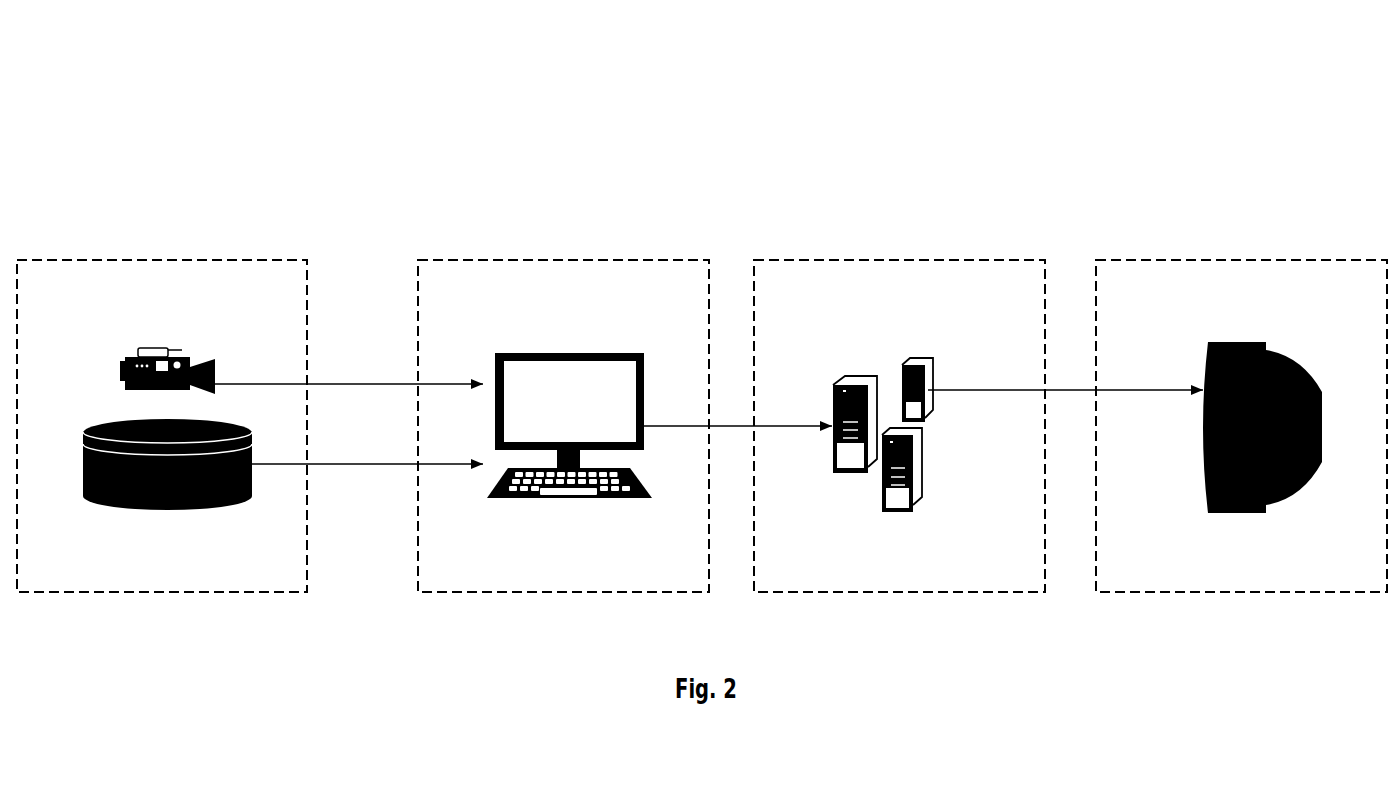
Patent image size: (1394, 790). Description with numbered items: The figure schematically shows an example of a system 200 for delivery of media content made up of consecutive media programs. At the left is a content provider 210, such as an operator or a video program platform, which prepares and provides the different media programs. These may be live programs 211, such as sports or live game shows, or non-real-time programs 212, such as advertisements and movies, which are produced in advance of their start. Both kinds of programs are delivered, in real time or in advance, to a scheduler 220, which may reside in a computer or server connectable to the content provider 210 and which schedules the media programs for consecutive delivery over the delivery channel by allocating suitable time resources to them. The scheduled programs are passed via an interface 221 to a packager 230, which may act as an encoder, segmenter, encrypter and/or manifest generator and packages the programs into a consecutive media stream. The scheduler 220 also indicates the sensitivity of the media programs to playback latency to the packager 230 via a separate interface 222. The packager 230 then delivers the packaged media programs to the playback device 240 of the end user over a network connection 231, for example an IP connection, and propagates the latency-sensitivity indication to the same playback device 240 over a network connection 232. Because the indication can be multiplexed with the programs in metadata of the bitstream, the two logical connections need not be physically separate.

The system for delivery of medium content 200 is at (262, 69).
The content provider 210 is at (211, 259).
The live programs 211 is at (159, 338).
The non-real-time programs 212 is at (155, 523).
The scheduler 220 is at (616, 259).
The interface 221 is at (742, 417).
The interface 222 is at (740, 477).
The packager 230 is at (953, 259).
The network connection 231 is at (1022, 385).
The network connection 232 is at (1017, 473).
The playback device 240 is at (1288, 259).